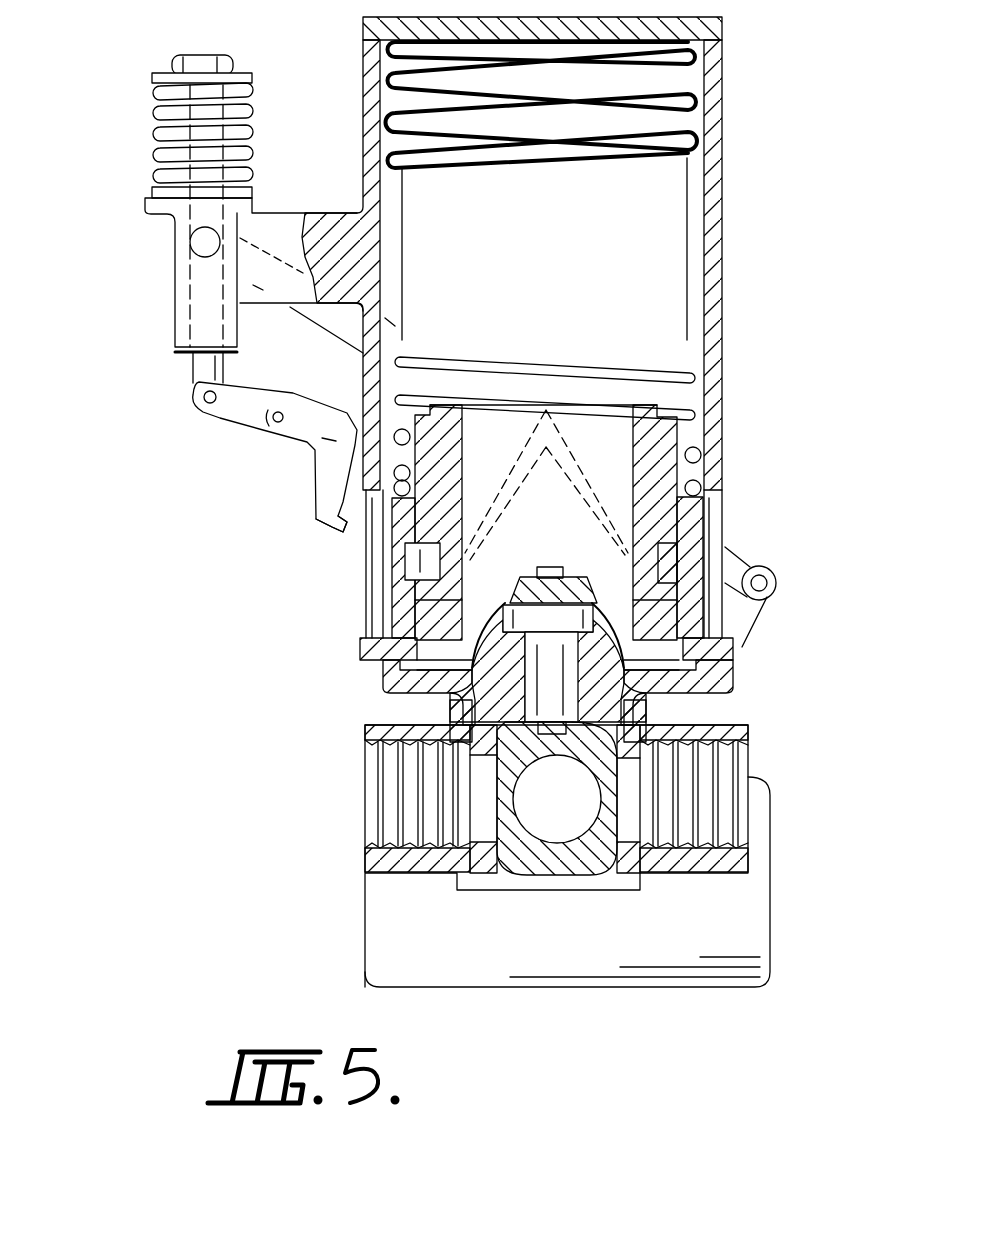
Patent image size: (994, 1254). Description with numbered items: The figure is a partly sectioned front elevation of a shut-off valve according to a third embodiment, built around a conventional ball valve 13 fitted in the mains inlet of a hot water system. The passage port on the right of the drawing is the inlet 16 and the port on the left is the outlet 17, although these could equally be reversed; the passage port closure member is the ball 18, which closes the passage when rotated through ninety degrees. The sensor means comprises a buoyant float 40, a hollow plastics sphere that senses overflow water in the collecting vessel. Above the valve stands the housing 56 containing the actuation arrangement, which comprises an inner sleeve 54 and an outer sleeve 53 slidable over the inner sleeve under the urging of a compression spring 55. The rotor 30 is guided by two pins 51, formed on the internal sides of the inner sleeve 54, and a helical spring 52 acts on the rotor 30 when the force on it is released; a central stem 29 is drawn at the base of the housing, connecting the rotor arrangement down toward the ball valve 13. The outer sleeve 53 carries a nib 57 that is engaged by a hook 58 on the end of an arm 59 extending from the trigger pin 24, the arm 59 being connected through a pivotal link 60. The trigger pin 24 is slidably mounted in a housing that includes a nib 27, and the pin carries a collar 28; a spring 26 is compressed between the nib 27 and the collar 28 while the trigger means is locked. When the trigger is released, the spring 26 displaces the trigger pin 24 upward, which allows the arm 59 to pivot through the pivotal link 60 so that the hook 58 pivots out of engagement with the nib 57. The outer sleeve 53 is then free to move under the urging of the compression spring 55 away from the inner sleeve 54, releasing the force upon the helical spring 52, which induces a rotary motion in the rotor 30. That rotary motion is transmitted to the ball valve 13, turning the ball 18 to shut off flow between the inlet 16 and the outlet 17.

The ball valve 13 is at (462, 904).
The inlet 16 is at (705, 802).
The outlet 17 is at (395, 805).
The ball 18 is at (545, 850).
The trigger pin 24 is at (215, 365).
The spring 26 is at (158, 108).
The nib 27 is at (150, 212).
The collar 28 is at (155, 78).
The valve stem 29 is at (552, 567).
The rotor 30 is at (475, 435).
The float 40 is at (742, 928).
The pins 51 is at (667, 558).
The helical spring 52 is at (586, 425).
The outer sleeve 53 is at (722, 218).
The inner sleeve 54 is at (725, 500).
The compression spring 55 is at (703, 143).
The housing 56 is at (745, 353).
The nib 57 is at (358, 642).
The hook 58 is at (330, 532).
The arm 59 is at (328, 470).
The pivotal link 60 is at (202, 397).